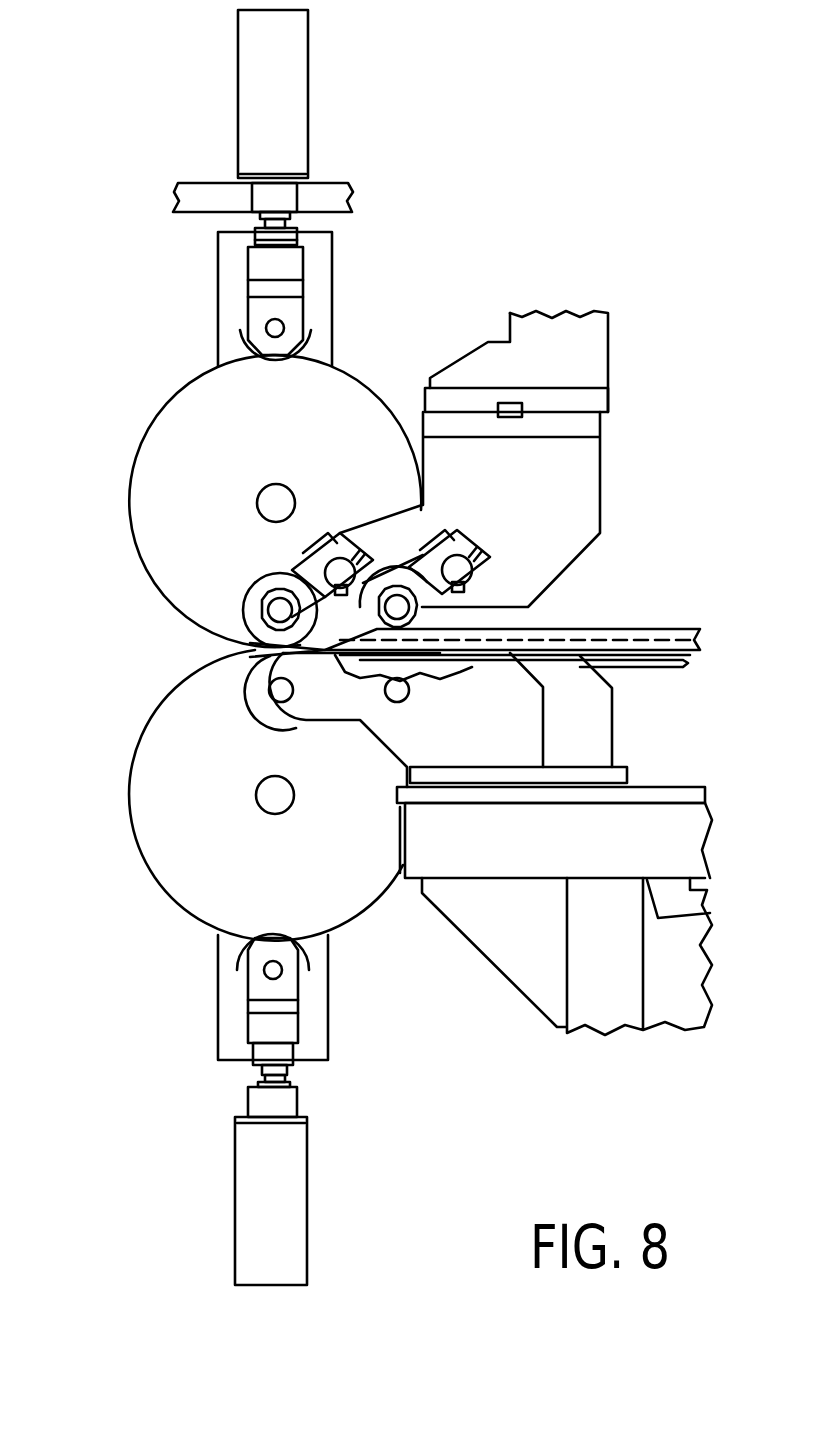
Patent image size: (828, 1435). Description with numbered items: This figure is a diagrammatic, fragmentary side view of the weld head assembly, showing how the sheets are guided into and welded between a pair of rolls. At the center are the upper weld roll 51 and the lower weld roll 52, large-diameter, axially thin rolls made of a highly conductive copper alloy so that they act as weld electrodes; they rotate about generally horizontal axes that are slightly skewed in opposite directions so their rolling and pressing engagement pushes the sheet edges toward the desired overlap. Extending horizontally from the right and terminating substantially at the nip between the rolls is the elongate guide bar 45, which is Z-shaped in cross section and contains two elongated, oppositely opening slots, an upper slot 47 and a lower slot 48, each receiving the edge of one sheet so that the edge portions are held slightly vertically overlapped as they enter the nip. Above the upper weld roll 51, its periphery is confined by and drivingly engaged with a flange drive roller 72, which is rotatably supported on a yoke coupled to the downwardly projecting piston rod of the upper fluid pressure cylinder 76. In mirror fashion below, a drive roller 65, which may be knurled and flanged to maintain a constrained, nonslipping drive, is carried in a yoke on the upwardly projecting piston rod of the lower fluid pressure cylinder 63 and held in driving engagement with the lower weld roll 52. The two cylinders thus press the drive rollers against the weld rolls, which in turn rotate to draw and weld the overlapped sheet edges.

The fluid pressure cylinder 76 is at (288, 90).
The flange drive roller 72 is at (305, 322).
The upper weld roll 51 is at (168, 443).
The lower weld roll 52 is at (157, 757).
The guide bar 45 is at (590, 633).
The upper slot 47 is at (643, 640).
The lower slot 48 is at (650, 663).
The drive roller 65 is at (308, 970).
The lower fluid pressure cylinder 63 is at (283, 1182).